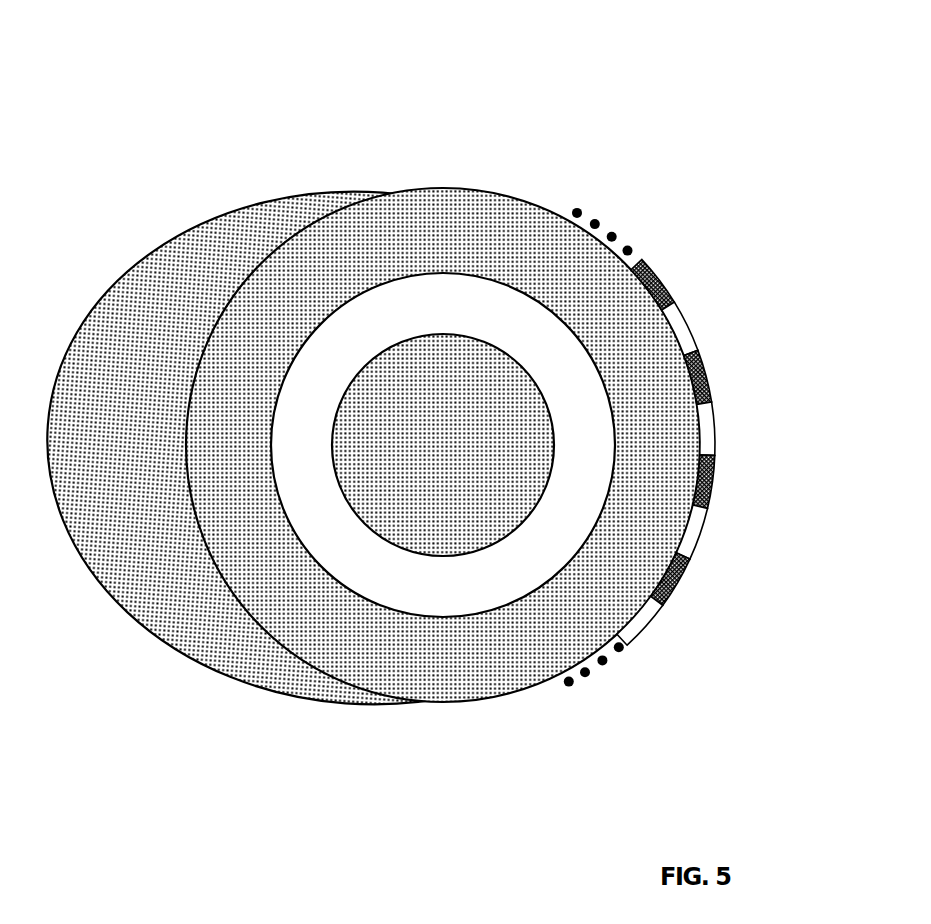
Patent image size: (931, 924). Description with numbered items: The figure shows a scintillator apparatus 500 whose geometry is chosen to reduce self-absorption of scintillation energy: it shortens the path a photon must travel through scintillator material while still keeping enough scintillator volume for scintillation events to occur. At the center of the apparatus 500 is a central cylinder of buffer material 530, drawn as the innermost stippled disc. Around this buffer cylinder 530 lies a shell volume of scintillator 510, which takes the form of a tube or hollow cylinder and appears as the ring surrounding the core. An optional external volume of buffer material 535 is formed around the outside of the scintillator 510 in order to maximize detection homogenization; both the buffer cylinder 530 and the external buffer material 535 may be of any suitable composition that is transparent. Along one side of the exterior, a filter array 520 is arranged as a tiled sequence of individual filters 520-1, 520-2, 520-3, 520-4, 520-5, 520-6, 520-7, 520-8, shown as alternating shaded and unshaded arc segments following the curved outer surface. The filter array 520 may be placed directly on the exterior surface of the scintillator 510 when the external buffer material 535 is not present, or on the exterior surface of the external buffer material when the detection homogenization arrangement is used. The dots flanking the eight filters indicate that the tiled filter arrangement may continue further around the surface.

The scintillator apparatus 500 is at (675, 87).
The scintillator 510 is at (478, 303).
The filter array 520 is at (742, 453).
The filter 520-1 is at (662, 280).
The filter 520-2 is at (687, 327).
The filter 520-3 is at (707, 377).
The filter 520-4 is at (715, 429).
The filter 520-5 is at (713, 474).
The filter 520-6 is at (703, 532).
The filter 520-7 is at (682, 580).
The filter 520-8 is at (707, 639).
The central cylinder of buffer material 530 is at (432, 511).
The external volume of buffer material 535 is at (314, 249).